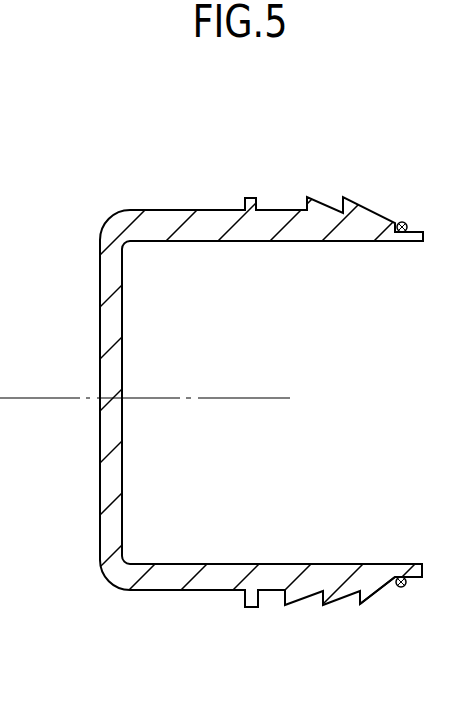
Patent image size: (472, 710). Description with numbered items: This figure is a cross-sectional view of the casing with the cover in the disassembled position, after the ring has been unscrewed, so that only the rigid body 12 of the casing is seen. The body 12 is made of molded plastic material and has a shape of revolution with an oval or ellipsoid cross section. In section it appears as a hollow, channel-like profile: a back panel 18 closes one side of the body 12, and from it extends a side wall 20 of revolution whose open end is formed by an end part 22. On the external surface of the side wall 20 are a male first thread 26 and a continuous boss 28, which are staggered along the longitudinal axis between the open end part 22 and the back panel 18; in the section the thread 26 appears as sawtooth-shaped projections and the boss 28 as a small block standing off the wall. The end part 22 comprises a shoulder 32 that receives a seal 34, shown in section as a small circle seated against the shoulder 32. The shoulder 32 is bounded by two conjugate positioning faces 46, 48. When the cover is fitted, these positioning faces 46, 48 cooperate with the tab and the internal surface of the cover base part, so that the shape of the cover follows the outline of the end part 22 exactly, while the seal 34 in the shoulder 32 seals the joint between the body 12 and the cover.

The hollow body 12 is at (205, 597).
The back panel 18 is at (110, 483).
The side wall 20 is at (170, 222).
The end part 22 is at (392, 566).
The male first thread 26 is at (297, 604).
The continuous boss 28 is at (250, 198).
The shoulder 32 is at (397, 578).
The seal 34 is at (399, 590).
The positioning face 46 is at (393, 220).
The positioning face 48 is at (418, 232).